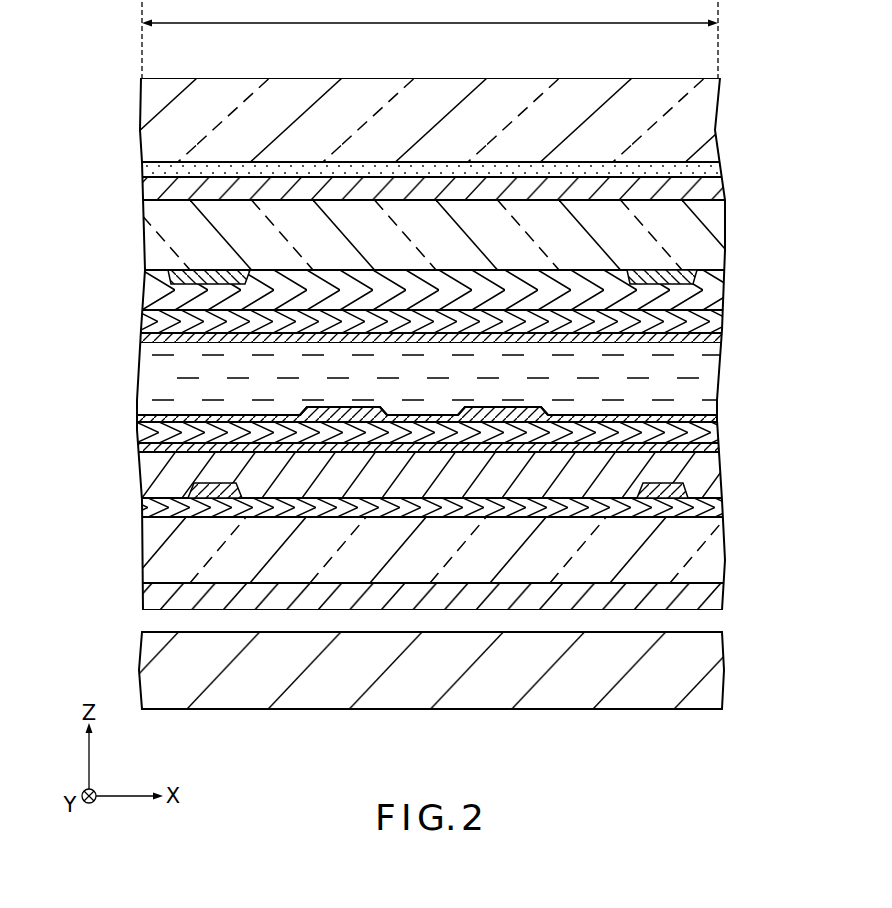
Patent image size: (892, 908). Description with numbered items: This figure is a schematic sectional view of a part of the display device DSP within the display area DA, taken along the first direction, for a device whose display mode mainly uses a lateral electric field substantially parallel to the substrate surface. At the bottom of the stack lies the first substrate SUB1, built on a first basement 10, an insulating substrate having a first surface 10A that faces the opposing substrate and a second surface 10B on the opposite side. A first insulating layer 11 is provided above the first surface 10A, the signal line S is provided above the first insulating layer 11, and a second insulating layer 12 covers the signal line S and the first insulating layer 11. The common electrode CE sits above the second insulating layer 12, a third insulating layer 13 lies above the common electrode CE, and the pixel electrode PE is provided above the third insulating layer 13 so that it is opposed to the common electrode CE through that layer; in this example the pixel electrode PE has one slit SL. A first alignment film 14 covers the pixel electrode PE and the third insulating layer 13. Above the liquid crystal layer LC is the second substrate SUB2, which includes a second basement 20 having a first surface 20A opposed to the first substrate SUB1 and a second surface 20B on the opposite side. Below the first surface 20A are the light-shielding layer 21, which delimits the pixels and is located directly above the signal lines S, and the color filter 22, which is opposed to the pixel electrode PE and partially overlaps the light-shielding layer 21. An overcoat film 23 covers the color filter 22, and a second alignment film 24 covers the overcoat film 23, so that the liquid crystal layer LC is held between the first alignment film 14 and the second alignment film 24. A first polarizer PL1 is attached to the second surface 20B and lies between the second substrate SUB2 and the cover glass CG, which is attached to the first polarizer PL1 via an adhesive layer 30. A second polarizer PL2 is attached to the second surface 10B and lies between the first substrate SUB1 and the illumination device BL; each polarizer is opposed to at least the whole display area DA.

The display device DSP is at (413, 308).
The display area DA is at (430, 39).
The cover glass CG is at (232, 93).
The adhesive layer 30 is at (714, 160).
The first polarizer PL1 is at (722, 188).
The second basement 20 is at (714, 238).
The second surface 20B is at (176, 188).
The first surface 20A is at (166, 281).
The light-shielding layer 21 is at (211, 270).
The color filter 22 is at (712, 293).
The overcoat film 23 is at (712, 325).
The second alignment film 24 is at (714, 340).
The second substrate SUB2 is at (406, 267).
The liquid crystal layer LC is at (153, 379).
The first substrate SUB1 is at (410, 484).
The first alignment film 14 is at (703, 416).
The pixel electrode PE is at (375, 437).
The slit SL is at (437, 404).
The third insulating layer 13 is at (707, 435).
The common electrode CE is at (716, 450).
The second insulating layer 12 is at (712, 475).
The signal line S is at (205, 500).
The first insulating layer 11 is at (712, 508).
The first basement 10 is at (712, 553).
The first surface 10A is at (175, 503).
The second surface 10B is at (166, 596).
The second polarizer PL2 is at (712, 597).
The illumination device BL is at (712, 672).